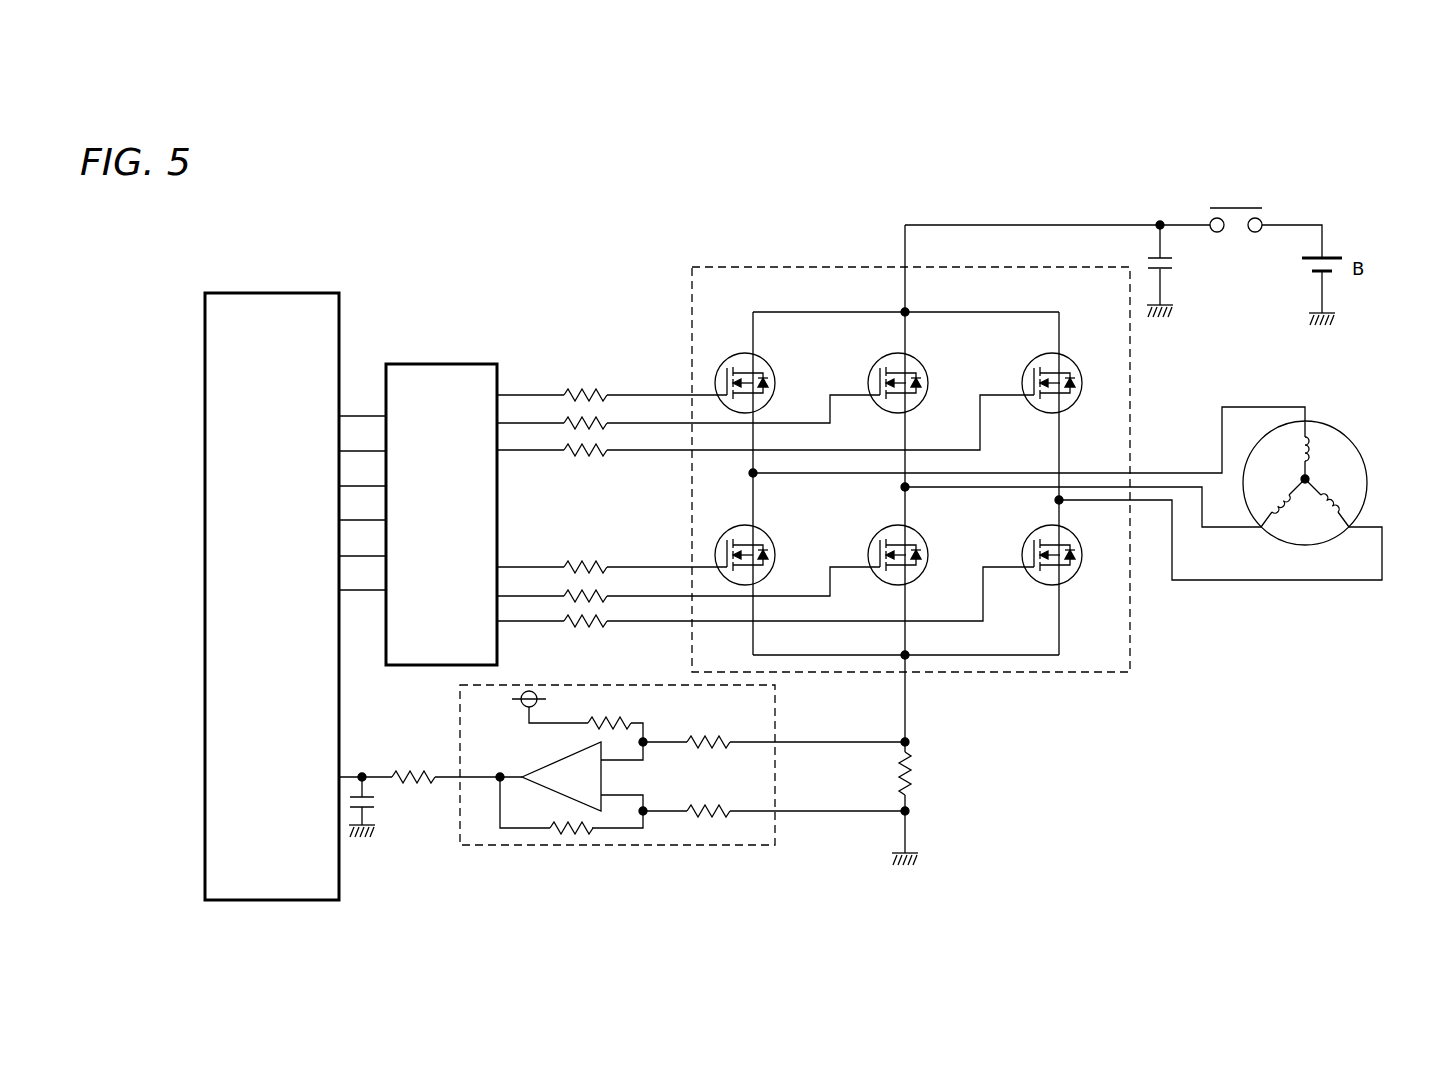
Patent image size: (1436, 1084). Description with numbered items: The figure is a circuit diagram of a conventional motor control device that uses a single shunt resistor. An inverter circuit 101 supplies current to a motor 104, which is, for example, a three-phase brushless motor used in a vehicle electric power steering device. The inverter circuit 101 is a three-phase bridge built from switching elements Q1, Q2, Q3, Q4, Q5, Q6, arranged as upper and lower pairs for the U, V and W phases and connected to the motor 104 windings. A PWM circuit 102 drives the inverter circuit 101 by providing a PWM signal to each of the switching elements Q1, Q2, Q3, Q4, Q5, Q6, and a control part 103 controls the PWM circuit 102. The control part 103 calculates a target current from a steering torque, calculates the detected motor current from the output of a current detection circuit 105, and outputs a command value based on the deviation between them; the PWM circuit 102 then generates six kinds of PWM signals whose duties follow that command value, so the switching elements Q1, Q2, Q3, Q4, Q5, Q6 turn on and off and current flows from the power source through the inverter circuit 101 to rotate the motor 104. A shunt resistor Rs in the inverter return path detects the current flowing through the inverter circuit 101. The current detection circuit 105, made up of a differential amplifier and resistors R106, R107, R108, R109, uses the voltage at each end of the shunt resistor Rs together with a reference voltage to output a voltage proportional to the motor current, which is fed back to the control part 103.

The inverter circuit 101 is at (876, 483).
The PWM circuit 102 is at (442, 364).
The control part 103 is at (205, 598).
The motor 104 is at (1350, 438).
The current detection circuit 105 is at (682, 765).
The switching element Q1 is at (762, 383).
The switching element Q2 is at (915, 383).
The switching element Q3 is at (1069, 383).
The switching element Q4 is at (762, 555).
The switching element Q5 is at (915, 555).
The switching element Q6 is at (1069, 555).
The shunt resistor Rs is at (916, 801).
The resistor R106 is at (774, 730).
The resistor R107 is at (798, 772).
The resistor R108 is at (586, 719).
The resistor R109 is at (571, 805).